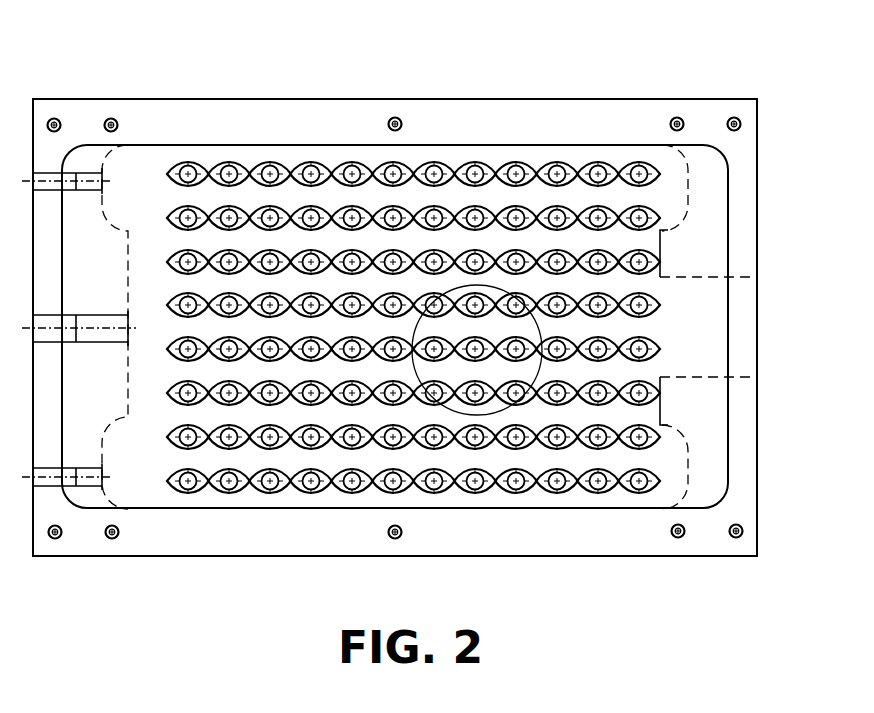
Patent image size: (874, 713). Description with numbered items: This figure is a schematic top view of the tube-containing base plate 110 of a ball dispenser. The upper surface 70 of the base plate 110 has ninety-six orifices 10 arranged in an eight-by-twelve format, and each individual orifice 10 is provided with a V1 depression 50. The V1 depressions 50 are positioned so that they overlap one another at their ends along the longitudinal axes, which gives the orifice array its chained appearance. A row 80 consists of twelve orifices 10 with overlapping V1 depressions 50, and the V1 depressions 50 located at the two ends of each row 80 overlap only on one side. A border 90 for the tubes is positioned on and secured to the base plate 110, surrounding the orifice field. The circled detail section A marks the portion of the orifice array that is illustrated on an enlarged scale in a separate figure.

The orifice 10 is at (516, 166).
The V1 depression 50 is at (568, 493).
The upper surface 70 is at (133, 172).
The row of orifices 80 is at (413, 309).
The border 90 is at (221, 540).
The tube-containing base plate 110 is at (633, 98).
The detail section A is at (532, 294).